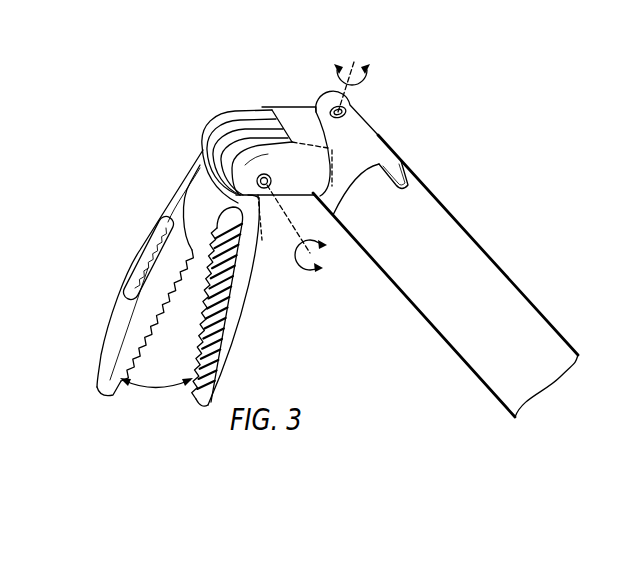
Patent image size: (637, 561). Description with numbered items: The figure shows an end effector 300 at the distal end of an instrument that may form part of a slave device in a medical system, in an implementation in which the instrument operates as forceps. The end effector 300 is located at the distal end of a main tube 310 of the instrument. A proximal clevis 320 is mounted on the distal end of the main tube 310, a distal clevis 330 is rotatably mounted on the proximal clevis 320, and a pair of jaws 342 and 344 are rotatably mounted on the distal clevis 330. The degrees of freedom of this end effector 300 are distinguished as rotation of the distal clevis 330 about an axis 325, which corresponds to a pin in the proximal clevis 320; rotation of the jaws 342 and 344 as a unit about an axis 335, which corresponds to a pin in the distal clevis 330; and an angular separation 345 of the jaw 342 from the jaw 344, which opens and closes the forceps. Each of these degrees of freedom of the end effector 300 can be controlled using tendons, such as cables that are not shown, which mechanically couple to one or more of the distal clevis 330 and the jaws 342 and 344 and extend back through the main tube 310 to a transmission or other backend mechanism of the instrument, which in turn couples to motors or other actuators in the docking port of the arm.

The end effector 300 is at (177, 91).
The main tube 310 is at (529, 306).
The proximal clevis 320 is at (384, 143).
The axis 325 is at (366, 81).
The distal clevis 330 is at (287, 112).
The axis 335 is at (306, 268).
The jaw 342 is at (232, 308).
The jaw 344 is at (110, 333).
The angular separation 345 is at (153, 383).